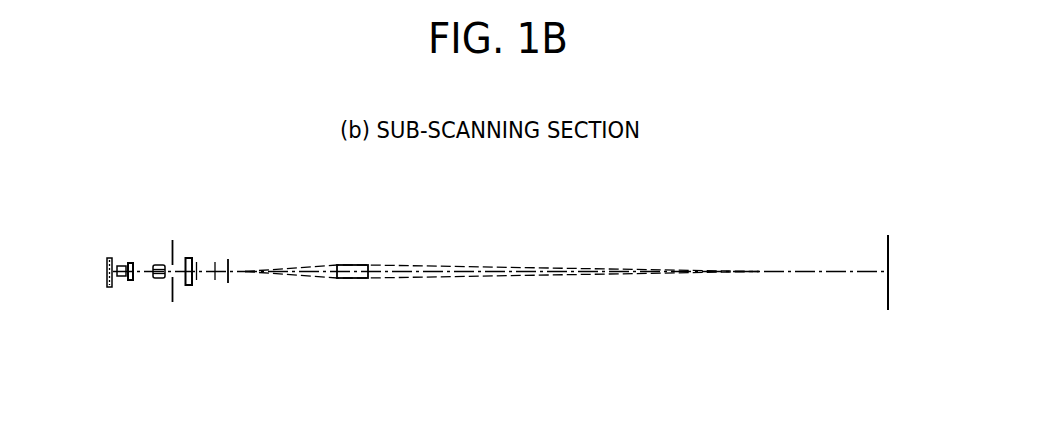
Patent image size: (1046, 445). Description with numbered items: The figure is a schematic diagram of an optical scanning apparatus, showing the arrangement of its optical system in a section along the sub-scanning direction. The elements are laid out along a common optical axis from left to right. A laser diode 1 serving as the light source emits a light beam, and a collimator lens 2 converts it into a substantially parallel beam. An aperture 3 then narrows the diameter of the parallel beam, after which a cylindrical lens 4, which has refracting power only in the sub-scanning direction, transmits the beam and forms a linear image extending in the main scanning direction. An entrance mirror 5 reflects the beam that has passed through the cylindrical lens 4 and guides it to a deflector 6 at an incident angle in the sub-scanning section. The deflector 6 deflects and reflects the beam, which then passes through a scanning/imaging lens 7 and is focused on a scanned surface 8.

The laser diode 1 is at (121, 265).
The collimator lens 2 is at (158, 265).
The aperture 3 is at (172, 240).
The cylindrical lens 4 is at (189, 258).
The entrance mirror 5 is at (202, 265).
The deflector 6 is at (232, 264).
The scanning/imaging lens 7 is at (352, 265).
The scanned surface 8 is at (887, 250).